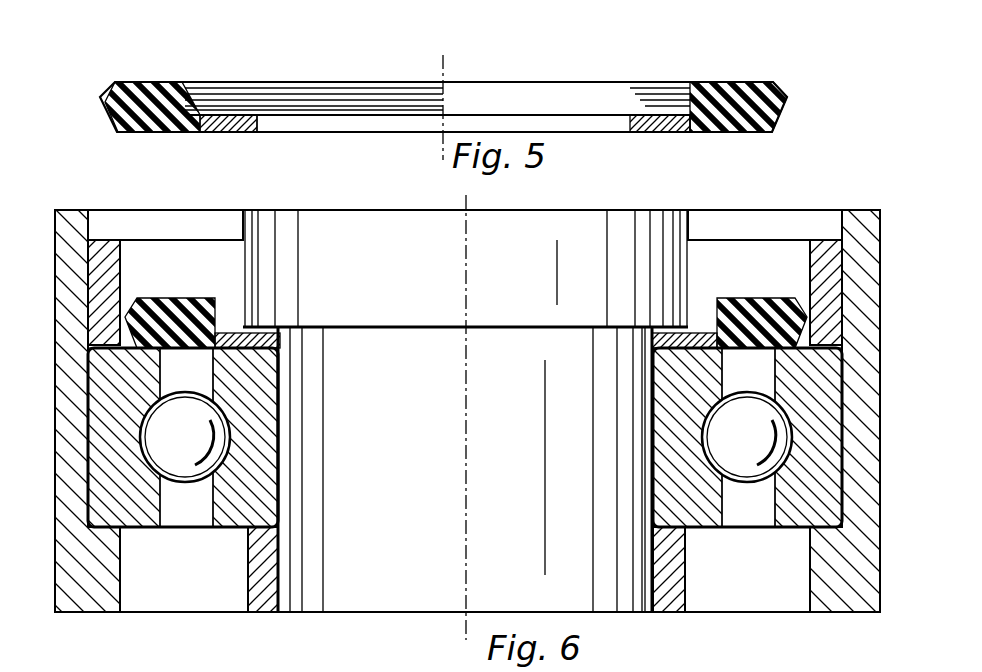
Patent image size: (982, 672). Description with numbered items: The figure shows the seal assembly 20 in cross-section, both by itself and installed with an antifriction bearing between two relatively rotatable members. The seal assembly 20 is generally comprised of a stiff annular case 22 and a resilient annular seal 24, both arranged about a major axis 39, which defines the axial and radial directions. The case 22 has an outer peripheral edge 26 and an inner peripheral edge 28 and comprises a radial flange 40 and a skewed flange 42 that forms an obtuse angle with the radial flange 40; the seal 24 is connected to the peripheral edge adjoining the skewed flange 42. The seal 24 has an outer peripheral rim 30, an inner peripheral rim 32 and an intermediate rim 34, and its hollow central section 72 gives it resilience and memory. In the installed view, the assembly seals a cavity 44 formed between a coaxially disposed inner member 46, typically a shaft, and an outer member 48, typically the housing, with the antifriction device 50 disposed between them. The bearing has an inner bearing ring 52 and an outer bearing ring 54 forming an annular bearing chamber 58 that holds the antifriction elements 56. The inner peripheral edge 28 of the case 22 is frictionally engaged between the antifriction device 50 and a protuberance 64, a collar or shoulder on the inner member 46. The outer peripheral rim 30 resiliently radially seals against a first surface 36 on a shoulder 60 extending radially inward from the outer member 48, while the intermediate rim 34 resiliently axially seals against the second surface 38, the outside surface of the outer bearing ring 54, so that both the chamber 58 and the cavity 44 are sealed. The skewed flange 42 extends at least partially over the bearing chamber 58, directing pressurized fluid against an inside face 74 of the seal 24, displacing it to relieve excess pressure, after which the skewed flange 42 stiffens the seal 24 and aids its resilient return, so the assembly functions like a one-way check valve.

In FIG. 5, the seal assembly 20 is at (104, 77).
In FIG. 5, the annular case 22 is at (245, 114).
In FIG. 6, the annular case 22 is at (268, 324).
In FIG. 5, the annular seal 24 is at (158, 78).
In FIG. 6, the annular seal 24 is at (186, 294).
In FIG. 5, the outer peripheral edge 26 is at (210, 92).
In FIG. 6, the outer peripheral edge 26 is at (262, 300).
In FIG. 5, the inner peripheral edge 28 is at (262, 126).
In FIG. 6, the inner peripheral edge 28 is at (285, 340).
In FIG. 5, the outer peripheral rim 30 is at (103, 100).
In FIG. 6, the outer peripheral rim 30 is at (120, 280).
In FIG. 5, the inner peripheral rim 32 is at (175, 84).
In FIG. 6, the inner peripheral rim 32 is at (198, 300).
In FIG. 5, the intermediate rim 34 is at (118, 133).
In FIG. 6, the intermediate rim 34 is at (202, 395).
In FIG. 6, the first surface 36 is at (132, 300).
In FIG. 6, the second surface 38 is at (228, 400).
In FIG. 5, the major axis 39 is at (446, 58).
In FIG. 6, the major axis 39 is at (468, 448).
In FIG. 5, the radial flange 40 is at (228, 120).
In FIG. 6, the radial flange 40 is at (285, 355).
In FIG. 5, the skewed flange 42 is at (194, 130).
In FIG. 6, the skewed flange 42 is at (268, 306).
In FIG. 6, the cavity 44 is at (204, 592).
In FIG. 6, the inner member 46 is at (508, 230).
In FIG. 6, the outer member 48 is at (96, 590).
In FIG. 6, the antifriction device 50 is at (176, 532).
In FIG. 6, the inner bearing ring 52 is at (226, 528).
In FIG. 6, the outer bearing ring 54 is at (147, 528).
In FIG. 6, the antifriction elements 56 is at (215, 462).
In FIG. 6, the annular bearing chamber 58 is at (240, 422).
In FIG. 6, the shoulder 60 is at (99, 242).
In FIG. 6, the protuberance 64 is at (520, 284).
In FIG. 5, the hollow central section 72 is at (128, 88).
In FIG. 6, the hollow central section 72 is at (150, 306).
In FIG. 5, the inside face 74 is at (133, 133).
In FIG. 6, the inside face 74 is at (242, 355).